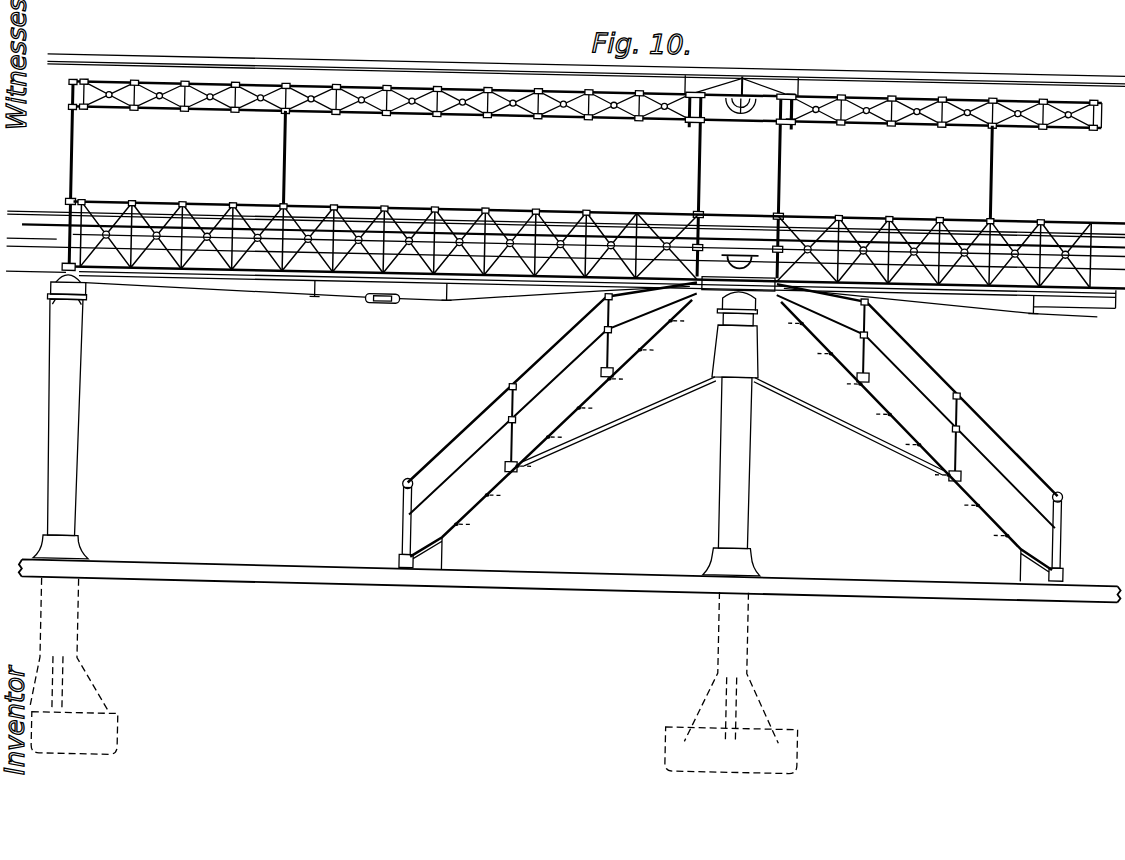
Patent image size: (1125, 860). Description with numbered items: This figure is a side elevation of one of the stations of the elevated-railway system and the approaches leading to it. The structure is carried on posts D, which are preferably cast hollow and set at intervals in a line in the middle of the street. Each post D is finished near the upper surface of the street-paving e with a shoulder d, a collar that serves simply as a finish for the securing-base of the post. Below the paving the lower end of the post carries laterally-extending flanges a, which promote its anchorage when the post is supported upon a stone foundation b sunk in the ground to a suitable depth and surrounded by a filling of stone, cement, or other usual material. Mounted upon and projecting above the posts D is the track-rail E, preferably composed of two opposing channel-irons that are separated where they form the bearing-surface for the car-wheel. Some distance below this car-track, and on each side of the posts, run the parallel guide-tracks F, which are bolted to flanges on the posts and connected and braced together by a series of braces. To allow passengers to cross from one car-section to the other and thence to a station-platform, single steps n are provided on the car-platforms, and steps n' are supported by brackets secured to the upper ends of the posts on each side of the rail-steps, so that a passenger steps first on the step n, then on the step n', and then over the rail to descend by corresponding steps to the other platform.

The track-rail E is at (2, 210).
The steps n' is at (573, 216).
The single steps n is at (599, 226).
The guide-tracks F is at (24, 276).
The posts D is at (72, 411).
The shoulder d is at (78, 546).
The laterally-extending flanges a is at (96, 700).
The stone foundation b is at (414, 743).
The street-paving e is at (570, 569).